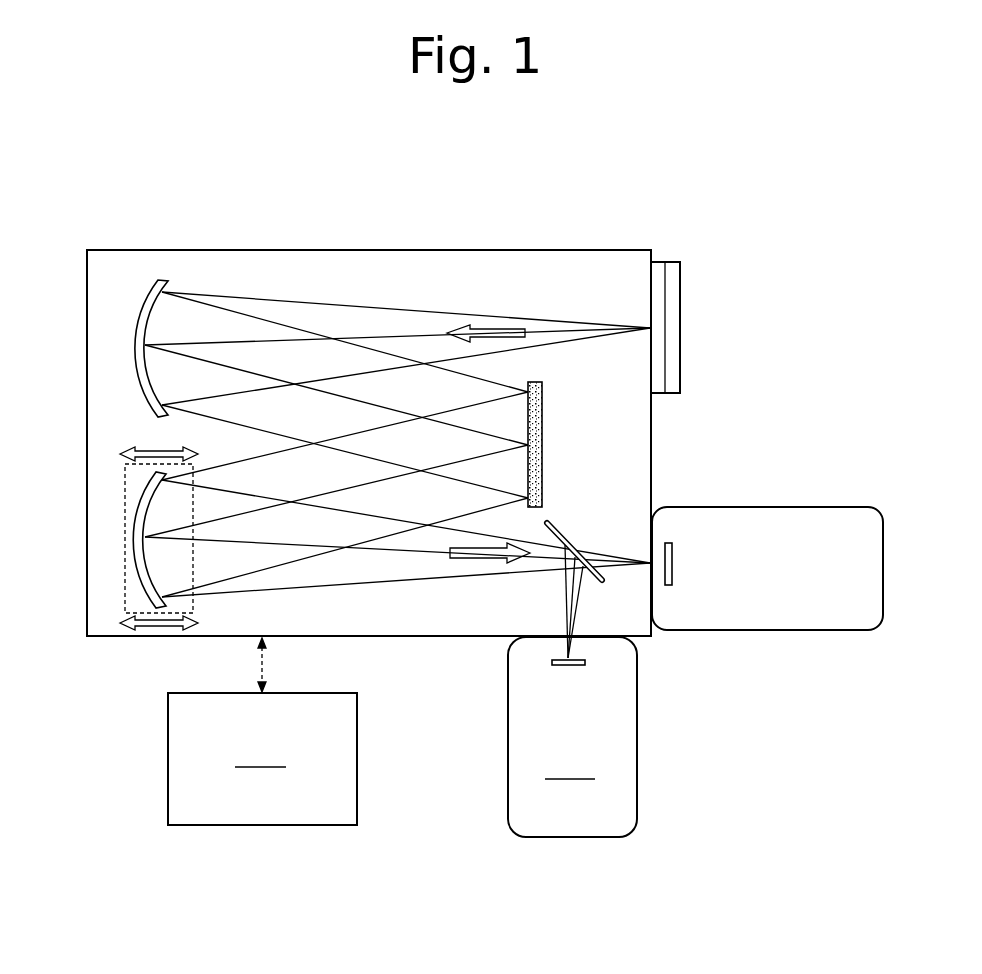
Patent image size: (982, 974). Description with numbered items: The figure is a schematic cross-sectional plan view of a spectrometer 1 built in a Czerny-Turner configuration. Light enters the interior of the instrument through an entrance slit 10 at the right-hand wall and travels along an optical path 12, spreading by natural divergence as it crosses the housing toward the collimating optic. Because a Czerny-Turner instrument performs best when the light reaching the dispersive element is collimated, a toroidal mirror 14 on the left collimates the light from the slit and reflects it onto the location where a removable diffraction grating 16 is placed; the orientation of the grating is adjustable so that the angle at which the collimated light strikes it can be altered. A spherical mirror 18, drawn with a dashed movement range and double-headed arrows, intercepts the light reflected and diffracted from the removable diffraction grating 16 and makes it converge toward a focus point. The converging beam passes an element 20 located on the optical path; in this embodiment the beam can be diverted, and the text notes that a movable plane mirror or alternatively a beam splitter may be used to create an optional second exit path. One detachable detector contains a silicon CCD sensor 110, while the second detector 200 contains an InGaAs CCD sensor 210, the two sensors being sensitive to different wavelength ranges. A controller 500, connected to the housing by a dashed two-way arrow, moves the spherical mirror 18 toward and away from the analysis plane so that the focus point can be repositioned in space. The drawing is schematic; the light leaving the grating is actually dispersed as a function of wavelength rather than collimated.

The spectrometer 1 is at (184, 187).
The entrance slit 10 is at (675, 323).
The optical path 12 is at (552, 332).
The toroidal mirror 14 is at (138, 313).
The removable diffraction grating 16 is at (542, 422).
The spherical mirror 18 is at (135, 553).
The beam splitter 20 is at (600, 582).
The silicon CCD sensor 110 is at (665, 545).
The second detector 200 is at (572, 737).
The InGaAs CCD sensor 210 is at (552, 663).
The controller 500 is at (262, 731).